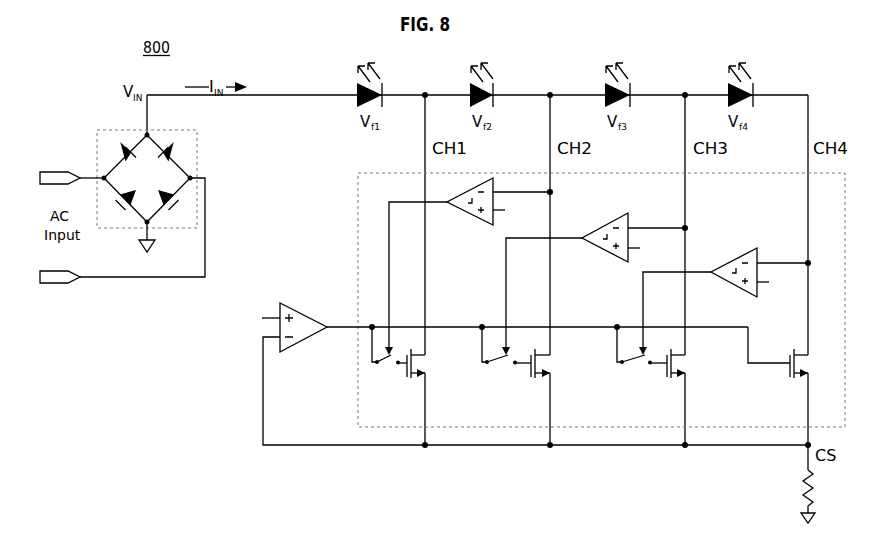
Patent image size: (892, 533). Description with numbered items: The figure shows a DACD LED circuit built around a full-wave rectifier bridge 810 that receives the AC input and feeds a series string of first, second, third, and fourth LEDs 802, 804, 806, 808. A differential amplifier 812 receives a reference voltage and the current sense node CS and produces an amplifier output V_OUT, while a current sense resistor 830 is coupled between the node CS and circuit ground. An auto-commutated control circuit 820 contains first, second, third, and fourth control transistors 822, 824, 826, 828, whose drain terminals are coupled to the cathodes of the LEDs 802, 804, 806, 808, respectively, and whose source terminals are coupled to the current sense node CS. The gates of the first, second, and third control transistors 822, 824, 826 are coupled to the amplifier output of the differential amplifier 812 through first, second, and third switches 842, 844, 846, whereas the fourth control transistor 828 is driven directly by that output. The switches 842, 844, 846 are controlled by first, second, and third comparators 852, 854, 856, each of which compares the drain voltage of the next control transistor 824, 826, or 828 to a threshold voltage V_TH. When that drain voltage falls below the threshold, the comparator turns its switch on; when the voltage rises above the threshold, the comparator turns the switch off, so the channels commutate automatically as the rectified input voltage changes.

The full-wave rectifier bridge 810 is at (125, 130).
The differential amplifier 812 is at (280, 303).
The first LED 802 is at (357, 84).
The second LED 804 is at (470, 84).
The third LED 806 is at (605, 84).
The fourth LED 808 is at (728, 84).
The auto-commutated control circuit 820 is at (358, 222).
The first control transistor 822 is at (405, 377).
The second control transistor 824 is at (529, 377).
The third control transistor 826 is at (665, 377).
The fourth control transistor 828 is at (788, 377).
The current sense resistor 830 is at (803, 486).
The first switch 842 is at (374, 368).
The second switch 844 is at (499, 368).
The third switch 846 is at (632, 368).
The first comparator 852 is at (471, 214).
The second comparator 854 is at (606, 251).
The third comparator 856 is at (730, 283).